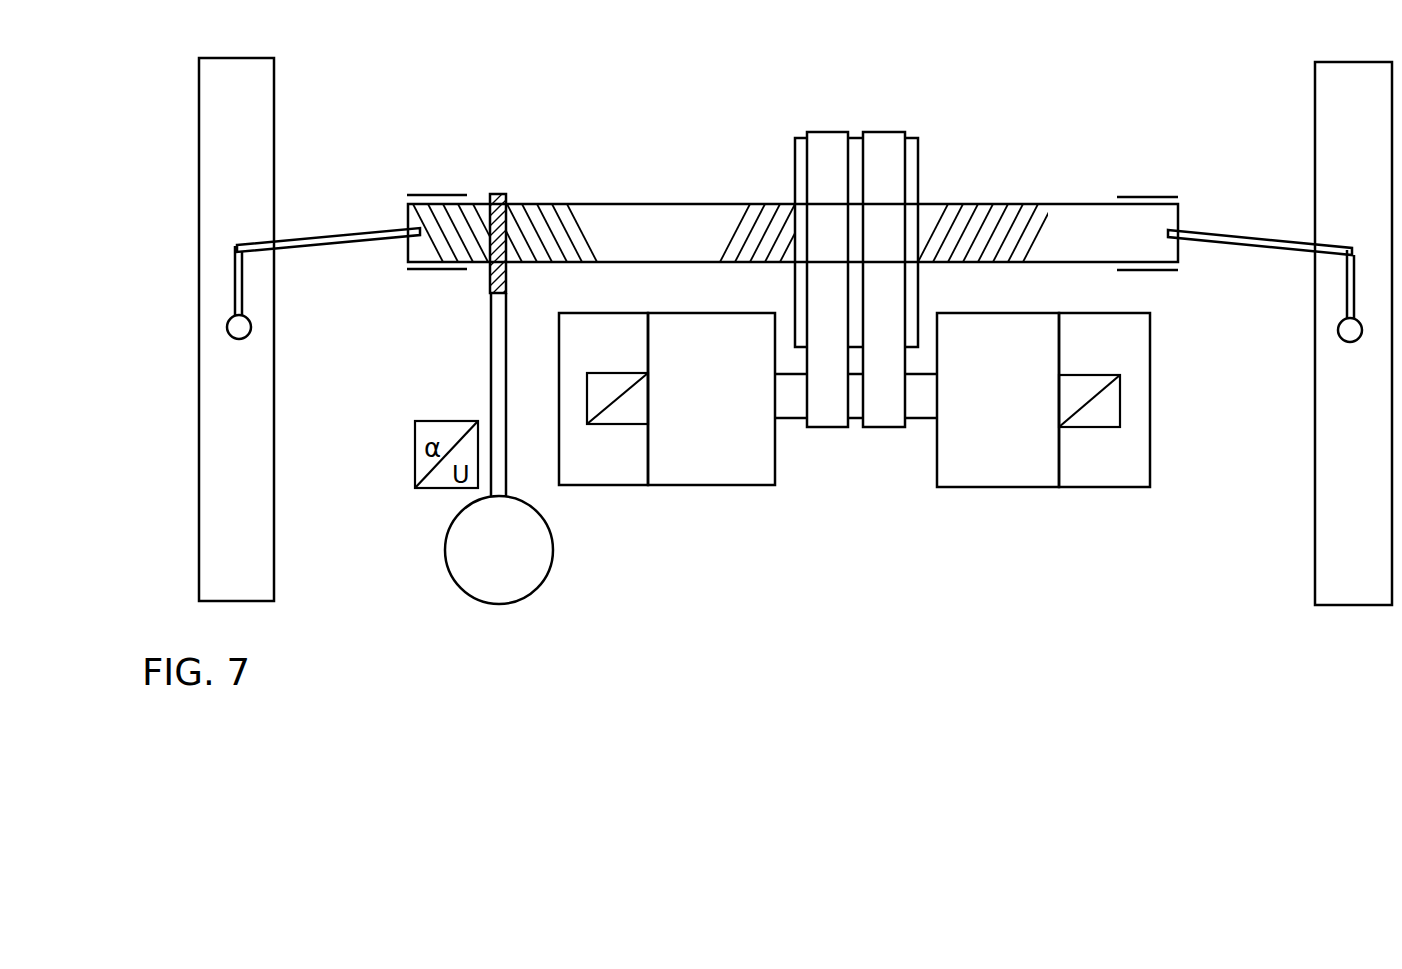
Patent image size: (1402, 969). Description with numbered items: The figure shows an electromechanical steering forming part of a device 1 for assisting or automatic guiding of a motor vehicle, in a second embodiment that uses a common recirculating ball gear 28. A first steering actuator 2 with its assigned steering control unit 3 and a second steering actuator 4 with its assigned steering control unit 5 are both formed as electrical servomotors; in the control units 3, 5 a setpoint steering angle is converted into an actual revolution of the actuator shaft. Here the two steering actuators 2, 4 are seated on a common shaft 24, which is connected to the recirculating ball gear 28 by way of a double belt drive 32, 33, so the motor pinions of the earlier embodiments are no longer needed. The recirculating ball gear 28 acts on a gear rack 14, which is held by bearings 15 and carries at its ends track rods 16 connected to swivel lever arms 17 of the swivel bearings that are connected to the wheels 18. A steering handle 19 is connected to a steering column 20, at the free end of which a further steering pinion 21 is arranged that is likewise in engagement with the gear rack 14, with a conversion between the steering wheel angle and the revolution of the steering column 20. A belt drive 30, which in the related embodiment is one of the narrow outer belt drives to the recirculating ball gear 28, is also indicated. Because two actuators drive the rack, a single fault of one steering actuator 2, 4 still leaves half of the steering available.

The device 1 is at (996, 70).
The first steering actuator 2 is at (731, 470).
The steering control unit 3 is at (607, 470).
The second steering actuator 4 is at (982, 471).
The steering control unit 5 is at (1106, 471).
The gear rack 14 is at (577, 220).
The bearings 15 is at (442, 195).
The track rods 16 is at (351, 232).
The swivel lever arms 17 is at (242, 287).
The wheels 18 is at (247, 396).
The steering handle 19 is at (533, 570).
The steering column 20 is at (498, 369).
The steering pinion 21 is at (500, 272).
The common shaft 24 is at (787, 407).
The recirculating ball gear 28 is at (802, 181).
The outer belt drive 30 is at (1177, 95).
The double belt drive 32 is at (833, 153).
The double belt drive 33 is at (881, 156).